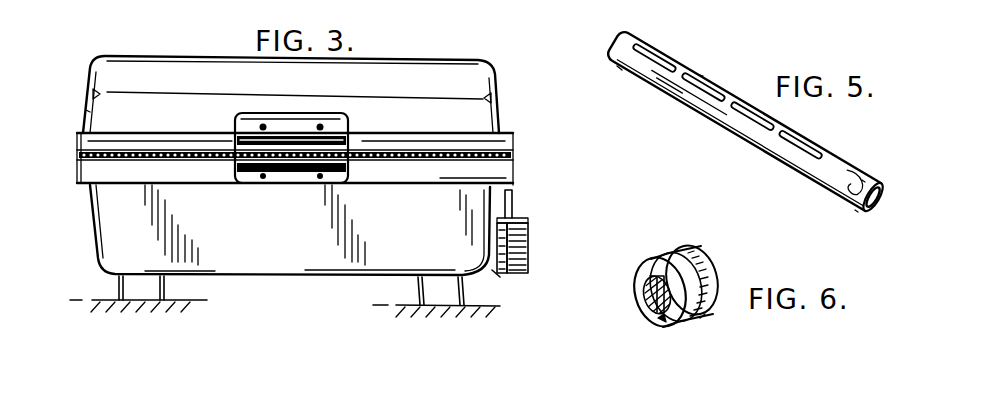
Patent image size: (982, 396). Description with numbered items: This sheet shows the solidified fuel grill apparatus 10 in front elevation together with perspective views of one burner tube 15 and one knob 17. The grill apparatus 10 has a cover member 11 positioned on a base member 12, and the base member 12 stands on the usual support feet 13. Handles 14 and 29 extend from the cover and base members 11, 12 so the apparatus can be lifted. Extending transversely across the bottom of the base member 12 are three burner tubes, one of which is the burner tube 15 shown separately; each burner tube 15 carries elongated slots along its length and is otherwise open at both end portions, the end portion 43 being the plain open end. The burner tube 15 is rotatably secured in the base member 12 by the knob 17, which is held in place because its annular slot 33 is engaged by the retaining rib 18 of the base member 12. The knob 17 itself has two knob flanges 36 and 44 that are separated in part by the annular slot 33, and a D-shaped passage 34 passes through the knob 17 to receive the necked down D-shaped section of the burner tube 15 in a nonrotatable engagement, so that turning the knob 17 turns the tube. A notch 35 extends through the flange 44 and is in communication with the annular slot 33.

In FIG. 3, the solidified fuel grill apparatus 10 is at (496, 68).
In FIG. 3, the cover member 11 is at (89, 114).
In FIG. 3, the base member 12 is at (101, 236).
In FIG. 3, the support feet 13 is at (121, 289).
In FIG. 3, the handle 14 is at (242, 126).
In FIG. 5, the burner tube 15 is at (745, 121).
In FIG. 3, the knob 17 is at (519, 238).
In FIG. 6, the knob 17 is at (706, 270).
In FIG. 3, the retaining rib 18 is at (507, 198).
In FIG. 3, the handle 29 is at (243, 184).
In FIG. 3, the annular slot 33 is at (504, 273).
In FIG. 6, the annular slot 33 is at (665, 252).
In FIG. 6, the D-shaped passage 34 is at (645, 303).
In FIG. 6, the notch 35 is at (661, 322).
In FIG. 6, the knob flange 36 is at (706, 318).
In FIG. 5, the end portion 43 is at (621, 73).
In FIG. 3, the knob flange 44 is at (495, 278).
In FIG. 6, the knob flange 44 is at (647, 287).